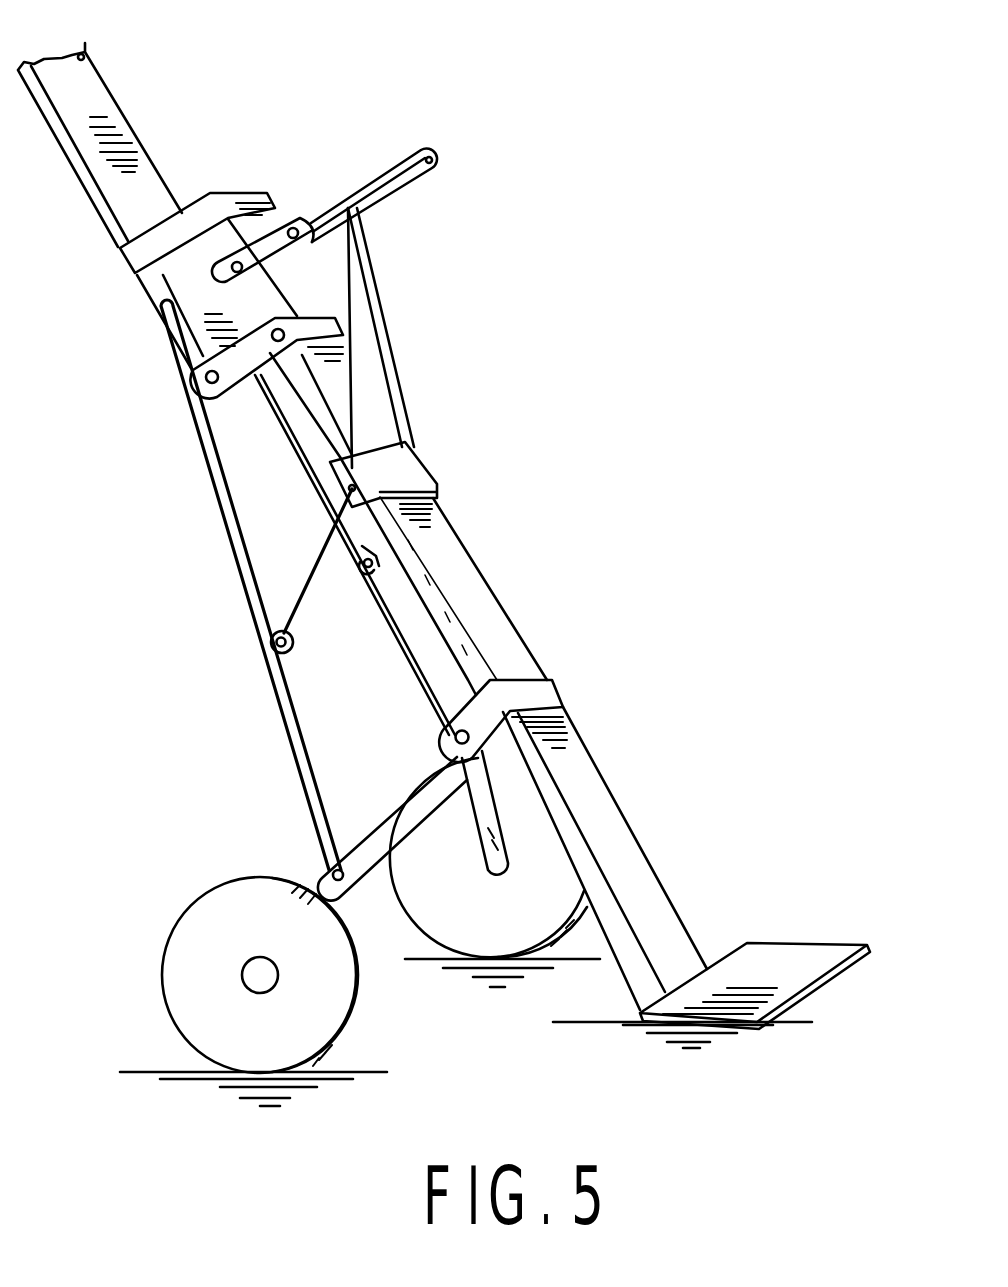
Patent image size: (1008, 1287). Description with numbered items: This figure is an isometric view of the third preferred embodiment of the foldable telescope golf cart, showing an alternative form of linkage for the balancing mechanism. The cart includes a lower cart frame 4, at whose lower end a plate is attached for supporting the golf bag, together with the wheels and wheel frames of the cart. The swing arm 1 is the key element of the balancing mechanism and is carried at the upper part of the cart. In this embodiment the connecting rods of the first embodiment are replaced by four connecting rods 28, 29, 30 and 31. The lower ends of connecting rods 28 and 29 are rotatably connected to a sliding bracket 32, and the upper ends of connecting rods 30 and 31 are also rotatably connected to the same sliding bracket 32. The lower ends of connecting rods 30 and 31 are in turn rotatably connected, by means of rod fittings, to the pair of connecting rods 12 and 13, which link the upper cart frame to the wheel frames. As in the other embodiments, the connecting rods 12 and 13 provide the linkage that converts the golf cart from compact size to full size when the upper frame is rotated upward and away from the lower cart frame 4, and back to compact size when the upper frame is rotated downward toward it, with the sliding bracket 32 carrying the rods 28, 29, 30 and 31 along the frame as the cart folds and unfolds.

The swing arm 1 is at (437, 152).
The lower cart frame 4 is at (572, 778).
The connecting rod 12 is at (253, 612).
The connecting rod 13 is at (413, 683).
The connecting rod 28 is at (352, 286).
The connecting rod 29 is at (396, 341).
The connecting rod 30 is at (300, 603).
The connecting rod 31 is at (382, 556).
The sliding bracket 32 is at (397, 467).